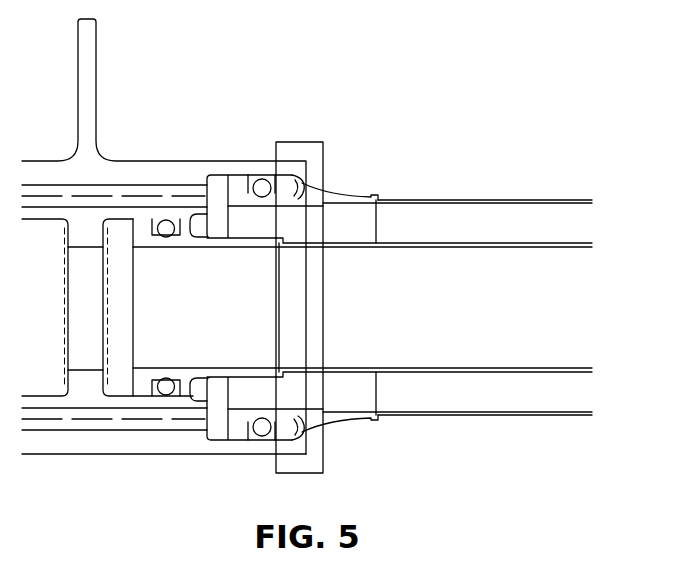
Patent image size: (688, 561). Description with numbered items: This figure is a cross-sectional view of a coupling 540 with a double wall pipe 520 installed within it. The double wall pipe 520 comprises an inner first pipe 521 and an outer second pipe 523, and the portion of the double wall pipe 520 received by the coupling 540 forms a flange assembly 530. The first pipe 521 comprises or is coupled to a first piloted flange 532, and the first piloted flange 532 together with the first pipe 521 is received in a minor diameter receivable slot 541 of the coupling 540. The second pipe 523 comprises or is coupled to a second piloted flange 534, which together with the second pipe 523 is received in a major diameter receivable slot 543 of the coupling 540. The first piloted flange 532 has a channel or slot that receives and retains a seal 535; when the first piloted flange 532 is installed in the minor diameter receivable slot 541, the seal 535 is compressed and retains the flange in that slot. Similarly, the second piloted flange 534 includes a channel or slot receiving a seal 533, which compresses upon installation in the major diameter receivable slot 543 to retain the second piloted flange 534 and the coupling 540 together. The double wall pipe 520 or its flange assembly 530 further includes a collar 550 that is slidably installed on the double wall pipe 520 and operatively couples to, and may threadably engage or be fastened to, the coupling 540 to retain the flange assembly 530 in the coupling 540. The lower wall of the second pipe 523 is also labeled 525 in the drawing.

The double wall pipe 520 is at (550, 170).
The first pipe 521 is at (445, 375).
The second pipe 523 is at (463, 201).
The outer pipe wall 525 is at (557, 393).
The flange assembly 530 is at (187, 455).
The first piloted flange 532 is at (140, 383).
The seal 533 is at (262, 178).
The second piloted flange 534 is at (305, 190).
The seal 535 is at (167, 394).
The coupling 540 is at (170, 160).
The minor diameter receivable slot 541 is at (126, 218).
The major diameter receivable slot 543 is at (213, 174).
The collar 550 is at (325, 461).